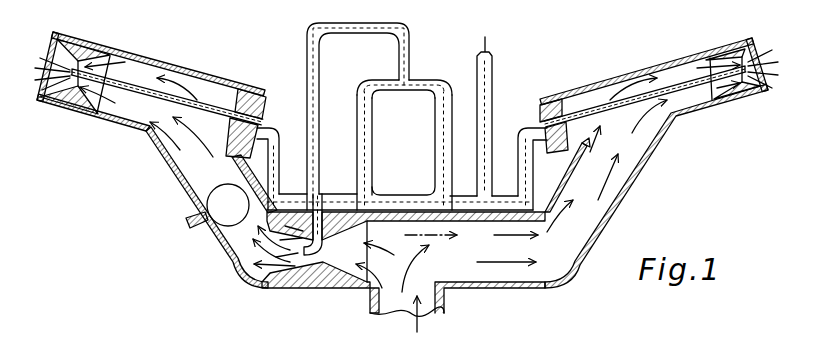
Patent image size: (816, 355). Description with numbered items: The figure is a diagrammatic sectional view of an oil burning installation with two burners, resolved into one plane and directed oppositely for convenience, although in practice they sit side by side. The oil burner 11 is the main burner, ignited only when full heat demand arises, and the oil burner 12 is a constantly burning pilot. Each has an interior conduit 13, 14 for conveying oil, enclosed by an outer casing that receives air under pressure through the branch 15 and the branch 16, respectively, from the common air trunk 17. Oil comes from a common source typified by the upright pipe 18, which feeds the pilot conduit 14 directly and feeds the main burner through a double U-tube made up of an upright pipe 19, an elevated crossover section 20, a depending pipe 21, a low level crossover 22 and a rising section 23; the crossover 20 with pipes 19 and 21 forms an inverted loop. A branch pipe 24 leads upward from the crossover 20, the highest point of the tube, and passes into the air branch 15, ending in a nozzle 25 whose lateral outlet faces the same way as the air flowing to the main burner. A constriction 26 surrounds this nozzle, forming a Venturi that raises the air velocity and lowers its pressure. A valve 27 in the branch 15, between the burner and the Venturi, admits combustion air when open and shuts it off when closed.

The oil burner 11 is at (197, 87).
The oil burner 12 is at (591, 97).
The interior conduit 13 is at (128, 88).
The interior conduit 14 is at (660, 88).
The branch 15 is at (192, 170).
The branch 16 is at (611, 192).
The air trunk 17 is at (425, 297).
The upright pipe 18 is at (482, 98).
The upright pipe 19 is at (438, 130).
The elevated crossover section 20 is at (422, 86).
The depending pipe 21 is at (368, 132).
The low level crossover 22 is at (313, 203).
The rising section 23 is at (276, 160).
The branch pipe 24 is at (354, 28).
The nozzle 25 is at (322, 244).
The constriction 26 is at (335, 284).
The valve 27 is at (222, 199).